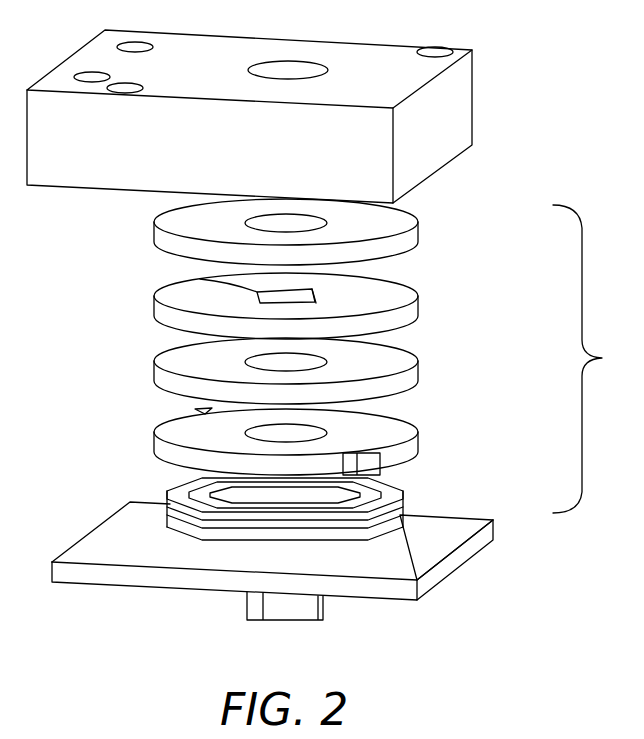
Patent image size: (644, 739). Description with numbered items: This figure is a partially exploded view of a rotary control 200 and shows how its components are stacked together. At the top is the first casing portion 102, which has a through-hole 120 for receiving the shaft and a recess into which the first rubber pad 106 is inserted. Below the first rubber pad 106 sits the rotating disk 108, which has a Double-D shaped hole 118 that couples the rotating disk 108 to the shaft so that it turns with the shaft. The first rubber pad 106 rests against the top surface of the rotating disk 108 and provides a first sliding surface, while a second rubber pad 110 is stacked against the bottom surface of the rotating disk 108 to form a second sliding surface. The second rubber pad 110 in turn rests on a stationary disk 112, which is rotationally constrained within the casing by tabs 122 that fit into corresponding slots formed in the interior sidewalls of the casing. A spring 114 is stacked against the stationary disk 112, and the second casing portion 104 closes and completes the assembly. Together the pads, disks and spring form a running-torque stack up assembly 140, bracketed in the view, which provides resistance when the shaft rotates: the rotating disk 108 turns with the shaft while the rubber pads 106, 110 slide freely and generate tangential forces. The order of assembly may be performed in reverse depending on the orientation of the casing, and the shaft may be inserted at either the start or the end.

The first casing portion 102 is at (473, 95).
The second casing portion 104 is at (495, 528).
The first rubber pad 106 is at (420, 232).
The rotating disk 108 is at (420, 305).
The second rubber pad 110 is at (420, 370).
The stationary disk 112 is at (420, 440).
The spring 114 is at (405, 501).
The Double-D shaped hole 118 is at (312, 289).
The through-hole 120 is at (307, 62).
The tabs 122 is at (195, 409).
The running-torque stack up assembly 140 is at (598, 359).
The assembly 200 is at (532, 637).